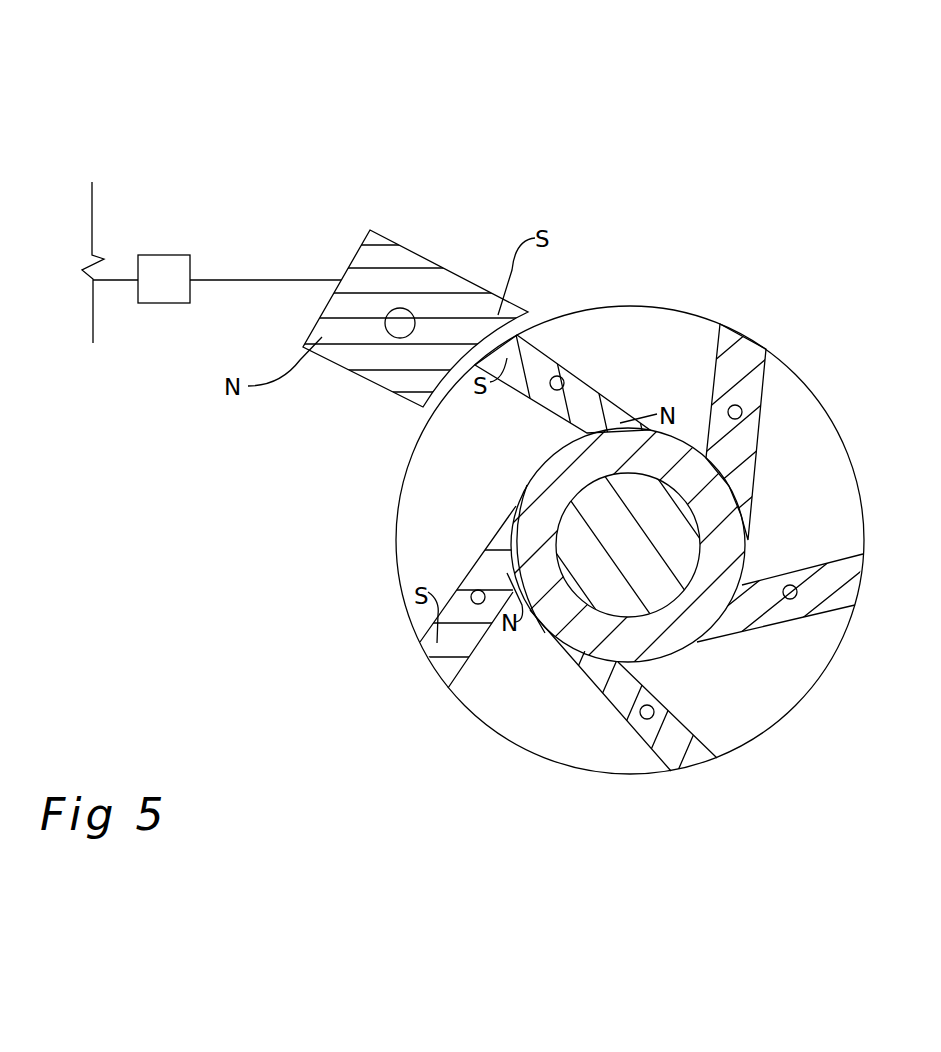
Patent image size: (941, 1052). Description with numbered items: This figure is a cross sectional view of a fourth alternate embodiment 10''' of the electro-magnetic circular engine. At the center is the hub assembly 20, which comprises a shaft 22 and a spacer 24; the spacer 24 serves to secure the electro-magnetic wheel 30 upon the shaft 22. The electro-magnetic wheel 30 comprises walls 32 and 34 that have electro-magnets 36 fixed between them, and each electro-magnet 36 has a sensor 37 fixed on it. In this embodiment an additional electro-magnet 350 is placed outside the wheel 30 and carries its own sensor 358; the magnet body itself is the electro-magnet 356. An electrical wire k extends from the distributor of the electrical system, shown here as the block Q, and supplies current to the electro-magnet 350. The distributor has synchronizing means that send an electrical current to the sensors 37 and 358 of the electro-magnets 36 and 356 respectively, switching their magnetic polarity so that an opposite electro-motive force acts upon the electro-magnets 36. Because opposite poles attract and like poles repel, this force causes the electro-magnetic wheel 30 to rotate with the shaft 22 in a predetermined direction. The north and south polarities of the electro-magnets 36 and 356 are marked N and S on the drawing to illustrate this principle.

The fourth alternate embodiment 10''' is at (187, 78).
The hub assembly 20 is at (680, 626).
The shaft 22 is at (645, 580).
The spacer 24 is at (575, 606).
The electro-magnetic wheel 30 is at (822, 385).
The wall 32 is at (749, 545).
The wall 34 is at (412, 478).
The electro-magnets 36 is at (730, 378).
The sensor 37 is at (554, 390).
The electro-magnet 350 is at (389, 236).
The electro-magnet 356 is at (423, 283).
The sensor 358 is at (400, 330).
The source Q is at (211, 262).
The electrical wire k is at (122, 280).